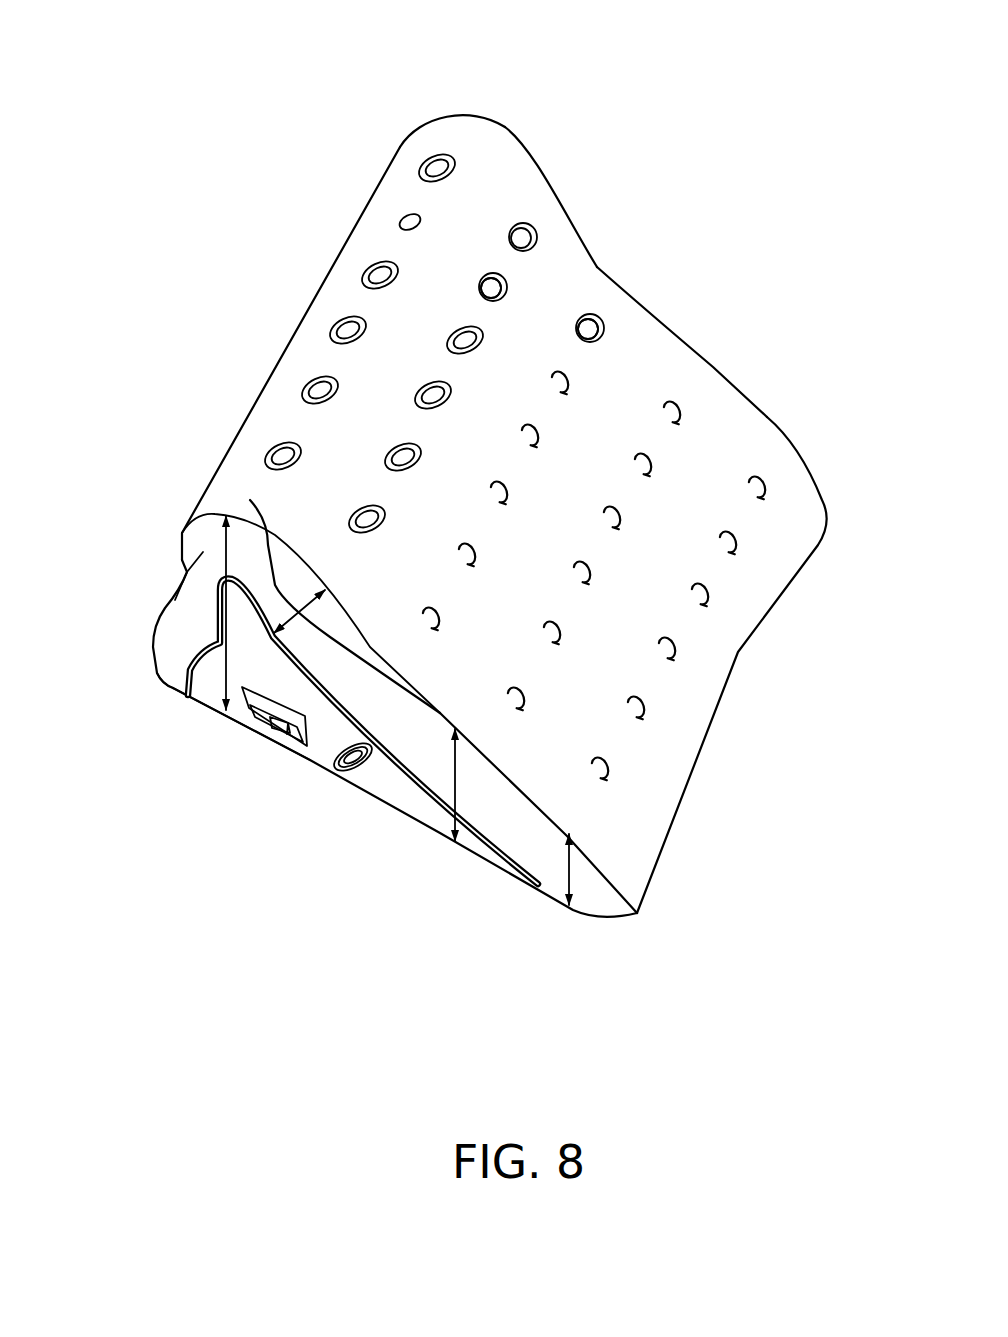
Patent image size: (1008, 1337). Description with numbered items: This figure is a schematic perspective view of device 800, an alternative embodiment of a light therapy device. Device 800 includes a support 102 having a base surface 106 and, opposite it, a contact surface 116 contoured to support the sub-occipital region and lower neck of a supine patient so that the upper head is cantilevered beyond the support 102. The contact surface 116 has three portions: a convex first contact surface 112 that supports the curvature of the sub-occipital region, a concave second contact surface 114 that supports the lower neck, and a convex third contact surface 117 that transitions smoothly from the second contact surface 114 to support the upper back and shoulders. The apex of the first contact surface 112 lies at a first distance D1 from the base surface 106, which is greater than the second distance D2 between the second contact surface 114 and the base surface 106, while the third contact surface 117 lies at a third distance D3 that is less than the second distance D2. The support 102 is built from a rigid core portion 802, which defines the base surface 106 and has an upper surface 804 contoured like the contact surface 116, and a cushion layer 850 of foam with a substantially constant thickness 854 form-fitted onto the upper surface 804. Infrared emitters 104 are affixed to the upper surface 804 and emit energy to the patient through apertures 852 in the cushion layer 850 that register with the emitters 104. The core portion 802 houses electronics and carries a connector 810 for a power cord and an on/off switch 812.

The device 800 is at (563, 73).
The first contact surface 112 is at (451, 131).
The infrared emitters 104 is at (590, 330).
The apertures 852 is at (477, 285).
The contact surface 116 is at (587, 287).
The second contact surface 114 is at (660, 343).
The third contact surface 117 is at (783, 470).
The thickness 854 is at (250, 500).
The cushion layer 850 is at (187, 572).
The first distance D1 is at (190, 670).
The support 102 is at (185, 733).
The on/off switch 812 is at (273, 722).
The upper surface 804 is at (337, 712).
The connector 810 is at (358, 772).
The core portion 802 is at (420, 812).
The base surface 106 is at (442, 840).
The second distance D2 is at (458, 787).
The third distance D3 is at (574, 867).